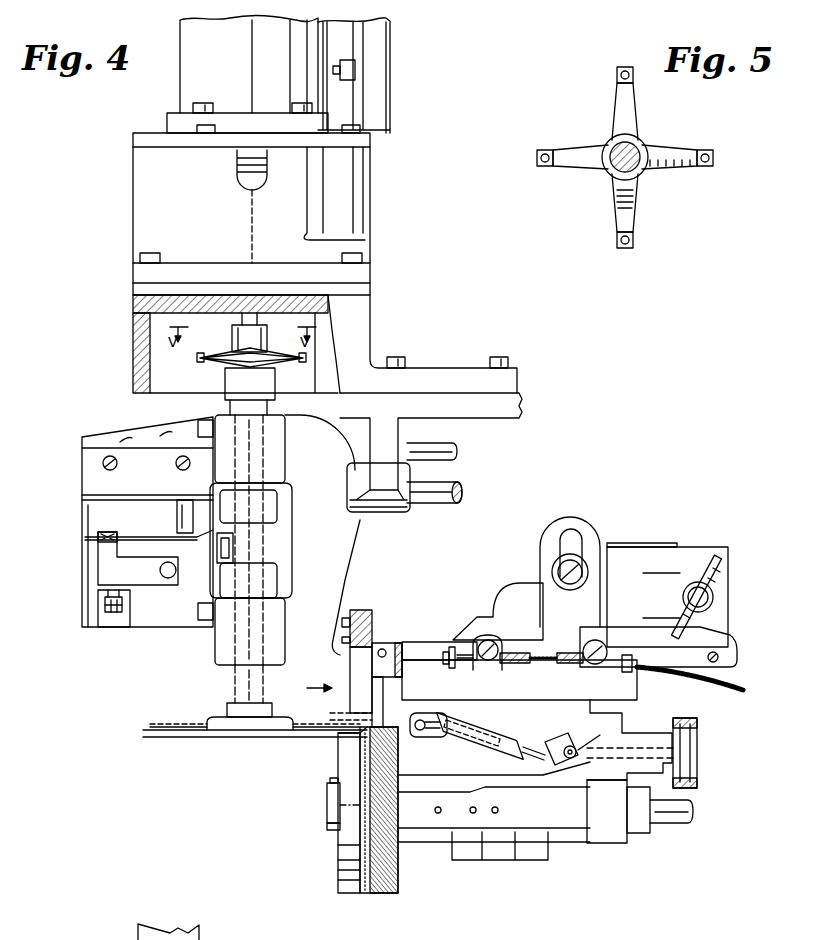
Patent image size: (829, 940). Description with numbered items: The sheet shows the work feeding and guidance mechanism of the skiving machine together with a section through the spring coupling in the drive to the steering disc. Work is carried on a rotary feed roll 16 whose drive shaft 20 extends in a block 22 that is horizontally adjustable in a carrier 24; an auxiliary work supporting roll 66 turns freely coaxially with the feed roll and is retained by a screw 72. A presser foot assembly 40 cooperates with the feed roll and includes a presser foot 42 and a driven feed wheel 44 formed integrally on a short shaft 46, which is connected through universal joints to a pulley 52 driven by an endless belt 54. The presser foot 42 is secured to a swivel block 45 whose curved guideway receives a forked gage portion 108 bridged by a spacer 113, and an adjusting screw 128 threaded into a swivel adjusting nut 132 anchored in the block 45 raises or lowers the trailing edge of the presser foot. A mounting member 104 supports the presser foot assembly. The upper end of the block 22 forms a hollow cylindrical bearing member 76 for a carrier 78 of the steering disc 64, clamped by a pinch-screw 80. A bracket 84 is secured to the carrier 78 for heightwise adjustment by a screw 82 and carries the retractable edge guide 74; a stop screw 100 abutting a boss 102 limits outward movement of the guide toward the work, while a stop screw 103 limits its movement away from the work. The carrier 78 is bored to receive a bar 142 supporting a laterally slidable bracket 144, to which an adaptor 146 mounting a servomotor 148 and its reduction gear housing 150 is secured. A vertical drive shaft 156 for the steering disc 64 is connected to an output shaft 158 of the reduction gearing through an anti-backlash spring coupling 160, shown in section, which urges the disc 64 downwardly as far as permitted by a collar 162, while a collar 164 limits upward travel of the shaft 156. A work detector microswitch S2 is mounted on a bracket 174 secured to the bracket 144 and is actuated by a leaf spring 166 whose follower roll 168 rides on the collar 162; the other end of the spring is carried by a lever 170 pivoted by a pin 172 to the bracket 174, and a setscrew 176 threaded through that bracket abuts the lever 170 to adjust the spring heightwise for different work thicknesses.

In FIG. 4, the servomotor 148 is at (226, 72).
In FIG. 4, the reduction gear housing 150 is at (355, 192).
In FIG. 4, the adaptor 146 is at (370, 316).
In FIG. 4, the bracket 144 is at (478, 418).
In FIG. 4, the bar 142 is at (423, 495).
In FIG. 4, the output shaft 158 is at (245, 331).
In FIG. 5, the output shaft 158 is at (630, 152).
In FIG. 4, the anti-backlash spring coupling 160 is at (222, 367).
In FIG. 5, the anti-backlash spring coupling 160 is at (628, 206).
In FIG. 4, the switch S2 is at (85, 475).
In FIG. 4, the bracket 174 is at (88, 517).
In FIG. 4, the leaf spring 166 is at (160, 537).
In FIG. 4, the lever 170 is at (105, 565).
In FIG. 4, the pin 172 is at (165, 576).
In FIG. 4, the setscrew 176 is at (112, 616).
In FIG. 4, the follower roll 168 is at (222, 560).
In FIG. 4, the collar 164 is at (263, 508).
In FIG. 4, the collar 162 is at (267, 582).
In FIG. 4, the vertical drive shaft 156 is at (240, 685).
In FIG. 4, the steering disc 64 is at (163, 737).
In FIG. 4, the swivel block 45 is at (356, 613).
In FIG. 4, the presser foot assembly 40 is at (302, 688).
In FIG. 4, the presser foot 42 is at (337, 715).
In FIG. 4, the feed wheel 44 is at (358, 735).
In FIG. 4, the spacer 113 is at (373, 622).
In FIG. 4, the gage portion 108 is at (368, 618).
In FIG. 4, the mounting member 104 is at (400, 655).
In FIG. 4, the adjusting screw 128 is at (388, 652).
In FIG. 4, the swivel adjusting nut 132 is at (383, 658).
In FIG. 4, the stop screw 100 is at (517, 662).
In FIG. 4, the boss 102 is at (527, 662).
In FIG. 4, the bracket 84 is at (512, 600).
In FIG. 4, the screw 82 is at (572, 582).
In FIG. 4, the bearing member 76 is at (678, 546).
In FIG. 4, the carrier 78 is at (728, 610).
In FIG. 4, the pinch-screw 80 is at (721, 566).
In FIG. 4, the stop screw 103 is at (633, 650).
In FIG. 4, the feed roll 16 is at (381, 893).
In FIG. 4, the screw 72 is at (327, 810).
In FIG. 4, the auxiliary work supporting roll 66 is at (350, 850).
In FIG. 4, the carrier 24 is at (472, 858).
In FIG. 4, the edge guide 74 is at (392, 718).
In FIG. 4, the shaft 46 is at (447, 732).
In FIG. 4, the block 22 is at (607, 742).
In FIG. 4, the pulley 52 is at (697, 738).
In FIG. 4, the endless belt 54 is at (688, 788).
In FIG. 4, the drive shaft 20 is at (673, 823).